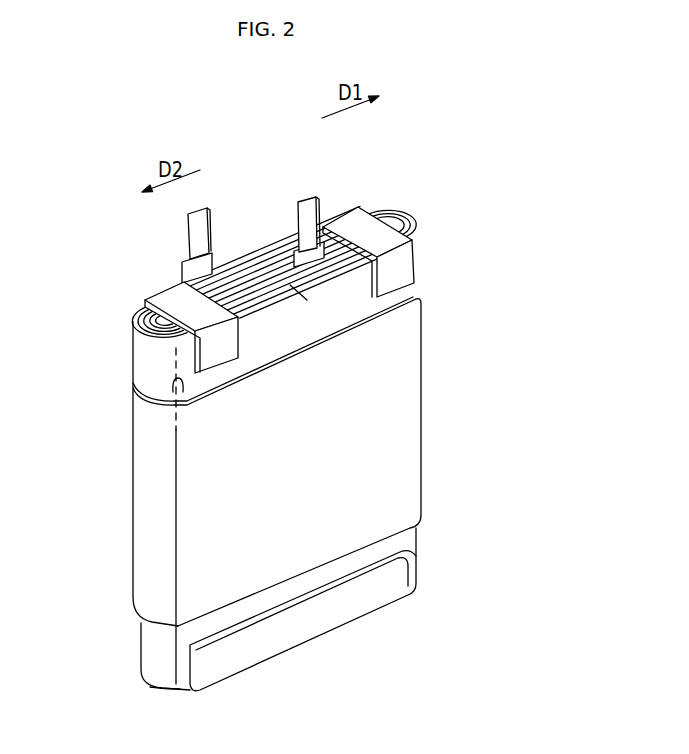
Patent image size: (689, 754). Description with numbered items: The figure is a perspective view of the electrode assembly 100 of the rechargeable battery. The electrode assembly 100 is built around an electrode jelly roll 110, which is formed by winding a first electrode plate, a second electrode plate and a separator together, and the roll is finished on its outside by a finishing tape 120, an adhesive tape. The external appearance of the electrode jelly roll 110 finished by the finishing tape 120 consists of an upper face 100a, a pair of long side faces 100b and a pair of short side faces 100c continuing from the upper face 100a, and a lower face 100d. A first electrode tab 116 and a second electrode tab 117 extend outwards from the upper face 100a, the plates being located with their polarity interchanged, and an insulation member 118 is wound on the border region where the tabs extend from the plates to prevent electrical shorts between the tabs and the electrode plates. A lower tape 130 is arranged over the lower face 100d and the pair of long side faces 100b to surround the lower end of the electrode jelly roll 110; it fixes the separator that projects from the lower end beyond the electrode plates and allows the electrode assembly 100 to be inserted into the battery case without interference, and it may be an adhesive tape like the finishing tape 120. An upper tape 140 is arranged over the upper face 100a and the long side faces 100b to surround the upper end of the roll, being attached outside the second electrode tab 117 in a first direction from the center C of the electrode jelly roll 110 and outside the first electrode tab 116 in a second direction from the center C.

The electrode assembly 100 is at (122, 195).
The upper face 100a is at (137, 320).
The long side faces 100b is at (127, 362).
The short side faces 100c is at (421, 543).
The lower face 100d is at (157, 683).
The electrode jelly roll 110 is at (496, 188).
The first electrode tab 116 is at (197, 237).
The second electrode tab 117 is at (312, 212).
The insulation member 118 is at (183, 277).
The finishing tape 120 is at (412, 430).
The lower tape 130 is at (315, 627).
The upper tape 140 is at (395, 263).
The center C is at (250, 267).